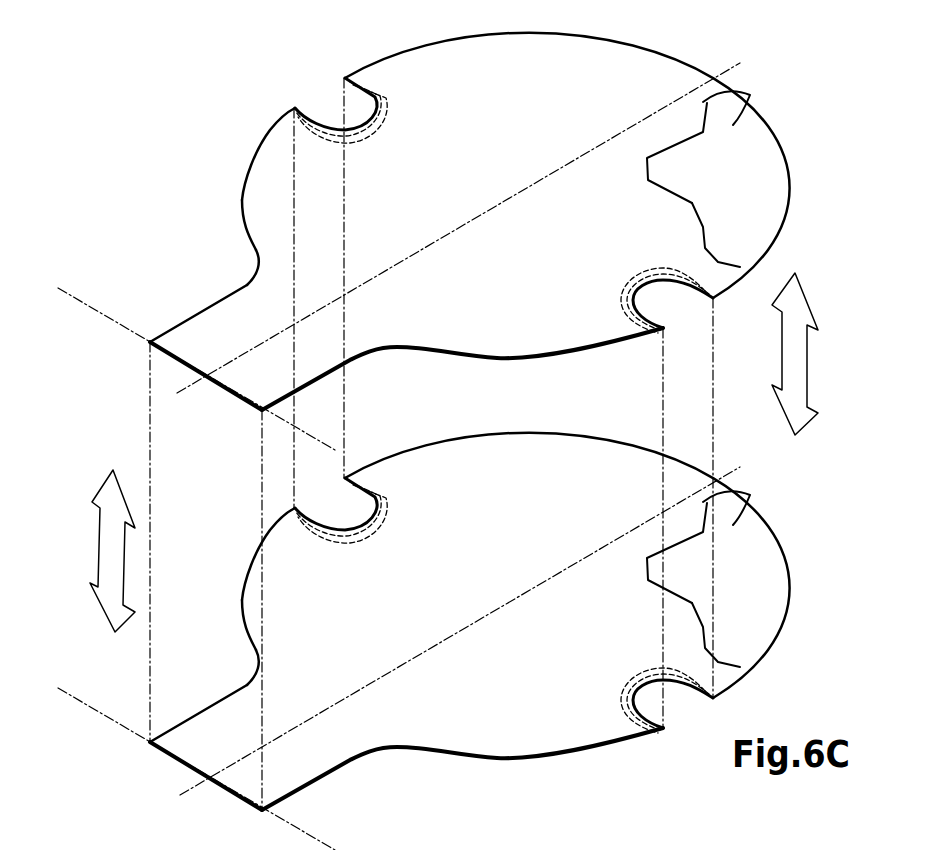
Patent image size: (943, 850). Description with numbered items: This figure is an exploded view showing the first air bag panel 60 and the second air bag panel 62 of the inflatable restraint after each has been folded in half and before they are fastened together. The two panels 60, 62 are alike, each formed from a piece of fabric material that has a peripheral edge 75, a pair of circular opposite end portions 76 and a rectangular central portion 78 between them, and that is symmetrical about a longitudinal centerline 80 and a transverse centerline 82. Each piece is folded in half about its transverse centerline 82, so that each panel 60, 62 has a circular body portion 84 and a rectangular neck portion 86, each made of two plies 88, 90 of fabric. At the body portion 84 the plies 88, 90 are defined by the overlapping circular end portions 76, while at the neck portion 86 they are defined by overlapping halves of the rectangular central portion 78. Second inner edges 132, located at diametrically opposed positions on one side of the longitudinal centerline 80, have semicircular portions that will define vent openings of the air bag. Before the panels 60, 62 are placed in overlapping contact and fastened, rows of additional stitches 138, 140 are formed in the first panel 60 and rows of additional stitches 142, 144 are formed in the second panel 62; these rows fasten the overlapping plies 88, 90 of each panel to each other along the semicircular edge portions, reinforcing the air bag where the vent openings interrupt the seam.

The first air bag panel 60 is at (617, 58).
The second air bag panel 62 is at (588, 455).
The peripheral edge 75 is at (750, 95).
The circular opposite end portions 76 is at (282, 225).
The rectangular central portion 78 is at (267, 315).
The longitudinal centerline 80 is at (720, 76).
The transverse centerline 82 is at (100, 305).
The circular body portion 84 is at (275, 190).
The rectangular neck portion 86 is at (203, 348).
The ply 88 is at (728, 168).
The ply 90 is at (657, 213).
The second inner edges 132 is at (632, 276).
The row of additional stitches 138 is at (367, 83).
The row of additional stitches 140 is at (390, 115).
The row of additional stitches 142 is at (390, 515).
The row of additional stitches 144 is at (367, 483).